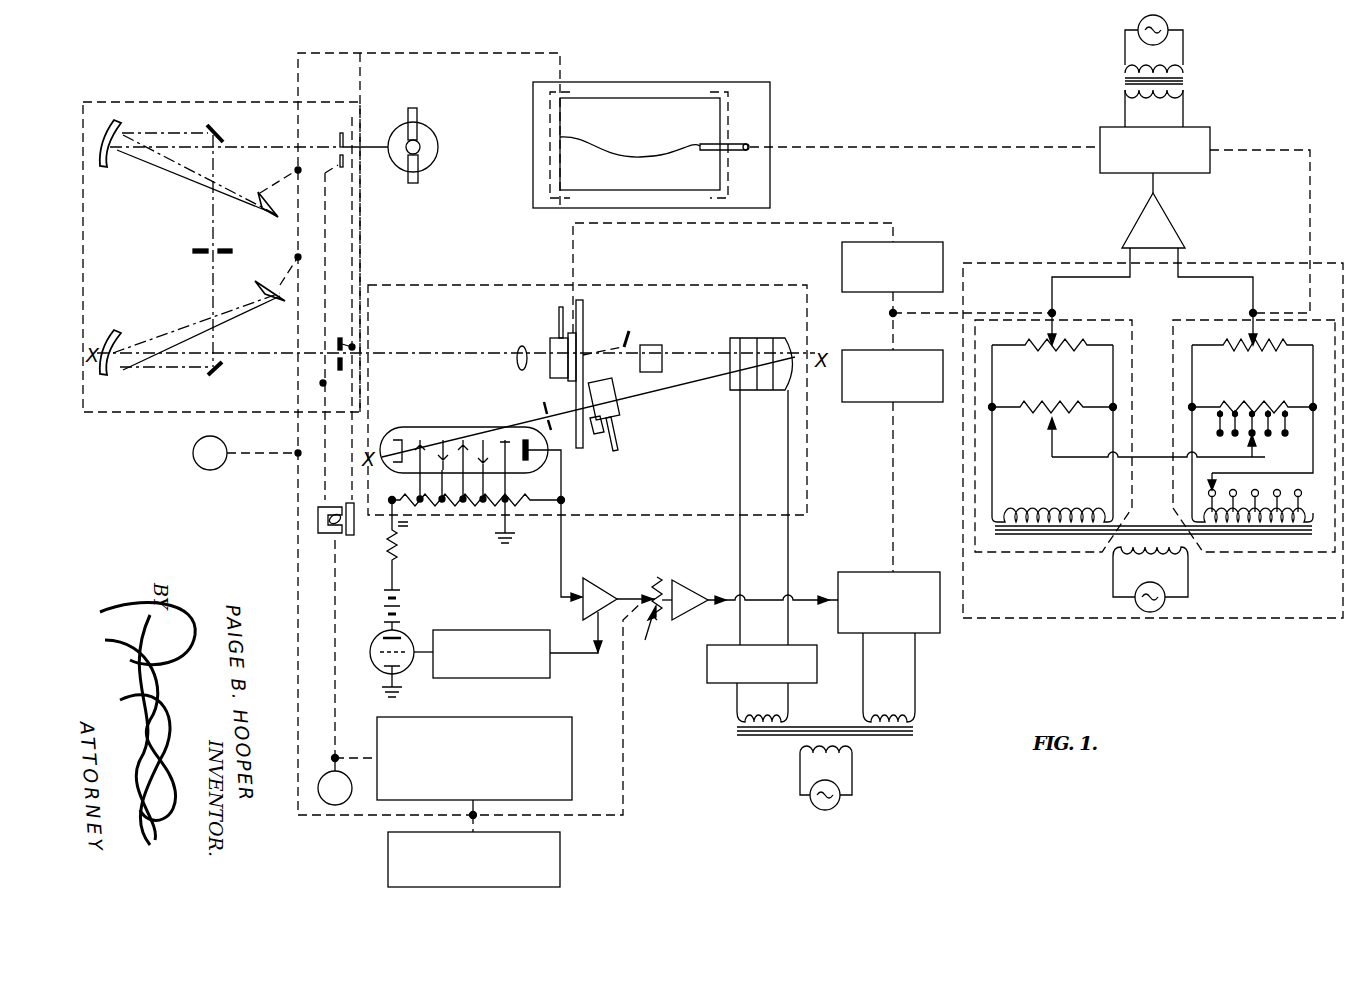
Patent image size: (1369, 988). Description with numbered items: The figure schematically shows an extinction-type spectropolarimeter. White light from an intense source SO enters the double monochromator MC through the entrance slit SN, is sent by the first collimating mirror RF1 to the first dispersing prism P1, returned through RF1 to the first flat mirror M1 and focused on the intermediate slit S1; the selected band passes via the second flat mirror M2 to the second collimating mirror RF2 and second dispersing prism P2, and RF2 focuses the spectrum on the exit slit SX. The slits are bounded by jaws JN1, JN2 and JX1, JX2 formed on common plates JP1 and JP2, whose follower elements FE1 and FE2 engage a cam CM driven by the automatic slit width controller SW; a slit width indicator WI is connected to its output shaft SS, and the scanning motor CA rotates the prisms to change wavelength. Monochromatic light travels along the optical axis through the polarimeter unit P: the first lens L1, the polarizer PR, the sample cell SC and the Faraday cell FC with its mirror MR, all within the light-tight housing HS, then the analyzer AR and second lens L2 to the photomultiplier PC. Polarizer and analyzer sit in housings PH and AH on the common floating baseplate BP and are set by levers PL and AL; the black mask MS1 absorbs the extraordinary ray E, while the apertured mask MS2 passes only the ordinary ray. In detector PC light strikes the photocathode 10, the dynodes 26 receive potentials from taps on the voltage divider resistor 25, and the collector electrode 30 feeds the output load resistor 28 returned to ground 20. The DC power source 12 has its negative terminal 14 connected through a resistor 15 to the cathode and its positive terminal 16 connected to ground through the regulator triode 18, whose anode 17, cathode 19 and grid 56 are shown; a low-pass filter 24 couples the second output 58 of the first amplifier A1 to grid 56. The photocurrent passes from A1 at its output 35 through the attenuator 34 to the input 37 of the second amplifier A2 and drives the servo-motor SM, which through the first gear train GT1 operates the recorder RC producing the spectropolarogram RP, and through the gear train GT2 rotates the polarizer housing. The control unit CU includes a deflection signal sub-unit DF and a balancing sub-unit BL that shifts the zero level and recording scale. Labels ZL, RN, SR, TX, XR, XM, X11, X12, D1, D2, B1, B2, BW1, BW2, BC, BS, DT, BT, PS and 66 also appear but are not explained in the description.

The monochromator MC is at (211, 102).
The first collimating mirror RF1 is at (110, 168).
The first flat mirror M1 is at (224, 135).
The first dispersing prism P1 is at (262, 192).
The intermediate slit S1 is at (192, 251).
The second dispersing prism P2 is at (272, 302).
The second collimating mirror RF2 is at (112, 333).
The second flat mirror M2 is at (222, 375).
The exit slit jaw JX1 is at (338, 344).
The exit slit SX is at (340, 359).
The exit slit jaw JX2 is at (338, 369).
The entrance slit SN is at (338, 146).
The entrance slit jaw JN1 is at (343, 132).
The entrance slit jaw JN2 is at (343, 166).
The source SO is at (438, 150).
The spectropolarogram RP is at (638, 98).
The recorded trace ZL is at (630, 141).
The recorder pen RN is at (701, 145).
The recorder RC is at (770, 122).
The pen drive linkage SR is at (915, 147).
The transformer TX is at (1188, 80).
The recorder servo motor XR is at (1210, 138).
The amplifier XM is at (1175, 225).
The amplifier input lead X11 is at (1128, 258).
The amplifier input lead X12 is at (1180, 258).
The control unit CU is at (1333, 264).
The deflection signal sub-unit DF is at (1106, 318).
The balancing sub-unit BL is at (1193, 320).
The potentiometer D1 is at (1047, 350).
The potentiometer D2 is at (1033, 404).
The potentiometer B1 is at (1248, 350).
The tapped potentiometer B2 is at (1247, 405).
The wiper BW1 is at (1255, 327).
The wiper BW2 is at (1182, 453).
The selector switch contacts BC is at (1217, 477).
The selector switch BS is at (1300, 513).
The transformer DT is at (992, 537).
The transformer BT is at (1318, 537).
The first gear train GT1 is at (870, 403).
The gear train GT2 is at (925, 243).
The servo-motor SM is at (918, 567).
The polarimeter unit P is at (541, 283).
The light-tight housing HS is at (695, 285).
The photomultiplier PC is at (415, 422).
The photocathode 10 is at (393, 430).
The secondary emitter dynodes 26 is at (443, 460).
The collector electrode 30 is at (522, 443).
The output load resistor 28 is at (516, 498).
The voltage divider resistor 25 is at (476, 506).
The ground 20 is at (502, 538).
The resistor 15 is at (397, 553).
The negative terminal 14 is at (396, 576).
The DC power source 12 is at (400, 600).
The anode 17 is at (397, 622).
The grid 56 is at (402, 640).
The positive terminal 16 is at (377, 641).
The regulator amplifier 18 is at (374, 667).
The cathode 19 is at (389, 678).
The low-pass filter 24 is at (508, 678).
The second output 58 is at (576, 633).
The first amplifier A1 is at (584, 610).
The output 35 is at (616, 593).
The input 37 is at (672, 586).
The attenuator 34 is at (650, 637).
The second amplifier A2 is at (692, 612).
The filter 66 is at (815, 681).
The power supply transformer PS is at (737, 729).
The mirror MR is at (795, 340).
The Faraday cell FC is at (738, 340).
The lever PL is at (560, 310).
The polarizer PR is at (546, 343).
The first lens L1 is at (517, 352).
The baseplate BP is at (583, 310).
The extraordinary ray E is at (606, 335).
The black mask MS1 is at (630, 338).
The sample cell SC is at (662, 349).
The polarizer housing PH is at (584, 372).
The analyzer AR is at (619, 410).
The lever AL is at (620, 438).
The analyzer housing AH is at (593, 430).
The second lens L2 is at (553, 404).
The apertured mask MS2 is at (553, 431).
The common plate JP1 is at (349, 503).
The follower element FE2 is at (328, 515).
The cam CM is at (322, 528).
The common plate JP2 is at (342, 533).
The follower element FE1 is at (349, 535).
The slit width indicator WI is at (335, 780).
The output shaft SS is at (354, 757).
The automatic slit width controller SW is at (572, 757).
The scanning motor CA is at (560, 866).